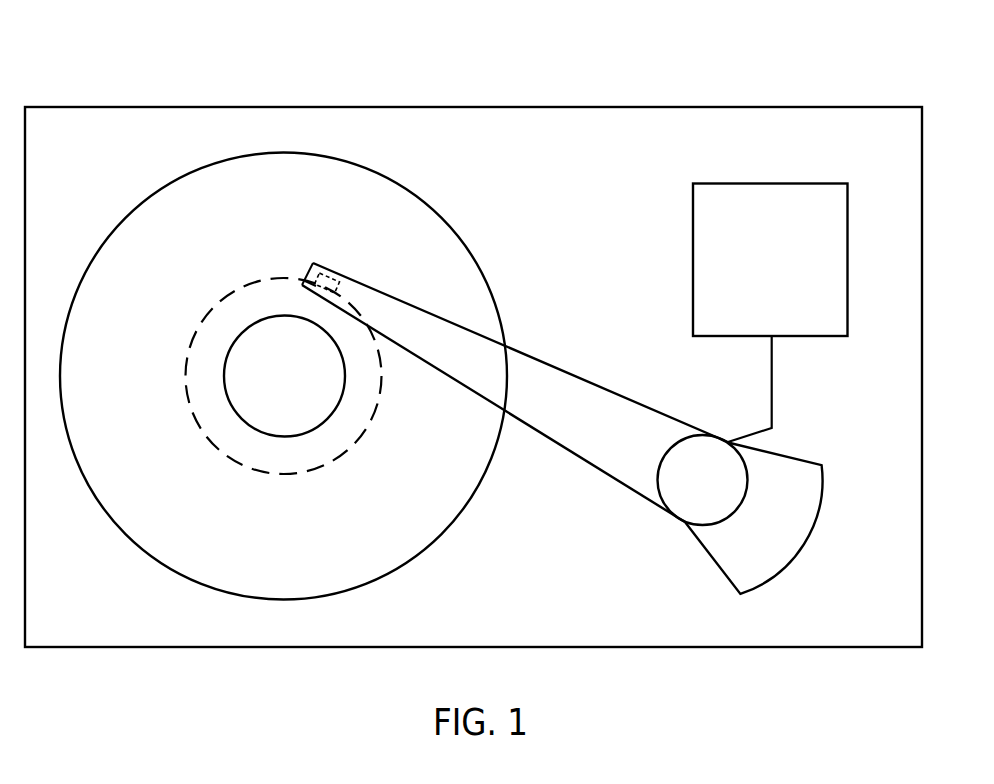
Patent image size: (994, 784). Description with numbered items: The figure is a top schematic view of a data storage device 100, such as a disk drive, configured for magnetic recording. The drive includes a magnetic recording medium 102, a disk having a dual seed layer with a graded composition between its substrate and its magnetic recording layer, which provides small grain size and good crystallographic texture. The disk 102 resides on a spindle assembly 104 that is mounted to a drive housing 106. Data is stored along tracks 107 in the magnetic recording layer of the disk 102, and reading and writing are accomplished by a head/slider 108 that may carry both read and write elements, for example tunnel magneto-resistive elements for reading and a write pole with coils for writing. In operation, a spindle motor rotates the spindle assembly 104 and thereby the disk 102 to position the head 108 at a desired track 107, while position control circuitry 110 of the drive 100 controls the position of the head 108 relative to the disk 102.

The data storage device 100 is at (229, 74).
The magnetic recording medium 102 is at (416, 195).
The spindle assembly 104 is at (303, 382).
The drive housing 106 is at (621, 107).
The tracks 107 is at (256, 280).
The head/slider 108 is at (338, 278).
The position control circuitry 110 is at (785, 276).